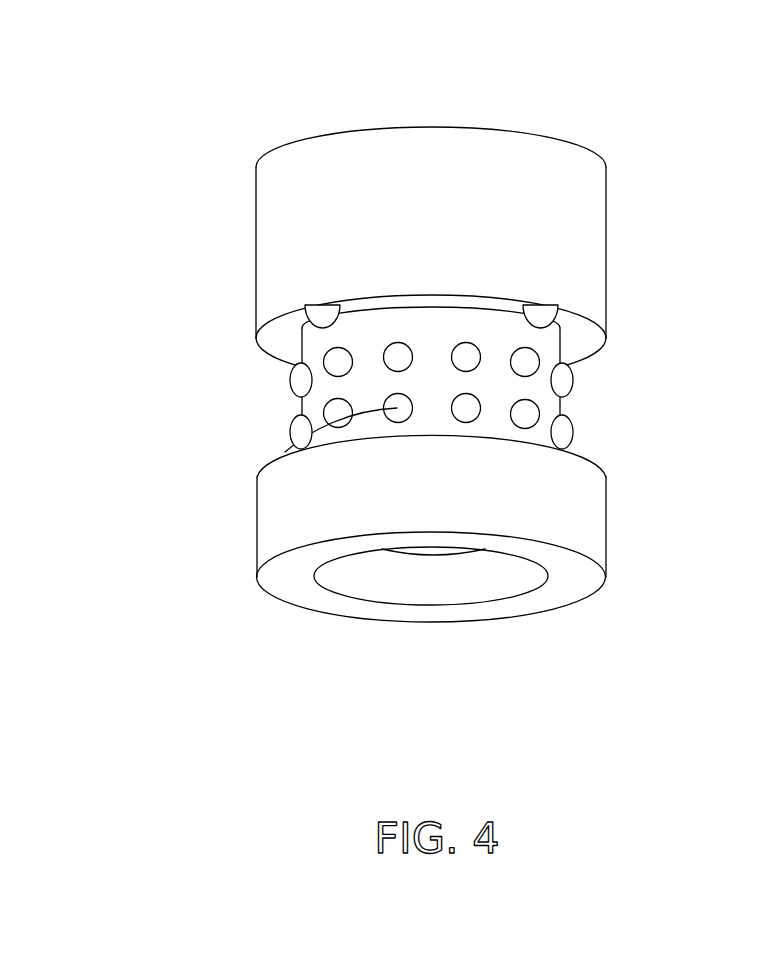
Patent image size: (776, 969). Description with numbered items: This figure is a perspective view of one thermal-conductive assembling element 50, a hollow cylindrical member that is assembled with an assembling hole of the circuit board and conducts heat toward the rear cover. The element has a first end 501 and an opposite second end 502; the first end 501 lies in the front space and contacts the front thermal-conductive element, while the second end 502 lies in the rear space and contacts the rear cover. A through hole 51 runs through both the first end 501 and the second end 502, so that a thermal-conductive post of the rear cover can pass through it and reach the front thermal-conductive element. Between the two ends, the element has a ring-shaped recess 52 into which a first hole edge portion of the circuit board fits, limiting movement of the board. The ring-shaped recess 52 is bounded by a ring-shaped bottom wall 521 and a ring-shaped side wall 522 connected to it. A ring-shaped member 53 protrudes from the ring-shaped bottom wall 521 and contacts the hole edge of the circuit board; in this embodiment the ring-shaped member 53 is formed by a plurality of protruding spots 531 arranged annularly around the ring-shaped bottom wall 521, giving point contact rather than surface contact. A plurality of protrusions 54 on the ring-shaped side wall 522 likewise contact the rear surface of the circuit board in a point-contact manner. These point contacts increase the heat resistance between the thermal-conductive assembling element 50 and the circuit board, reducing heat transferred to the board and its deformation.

The thermal-conductive assembling element 50 is at (277, 112).
The second end 502 is at (446, 127).
The first end 501 is at (413, 555).
The through hole 51 is at (438, 550).
The ring-shaped recess 52 is at (511, 379).
The ring-shaped bottom wall 521 is at (548, 405).
The ring-shaped side wall 522 is at (583, 349).
The ring-shaped member 53 is at (426, 409).
The protruding spot 531 is at (338, 411).
The protrusion 54 is at (318, 317).